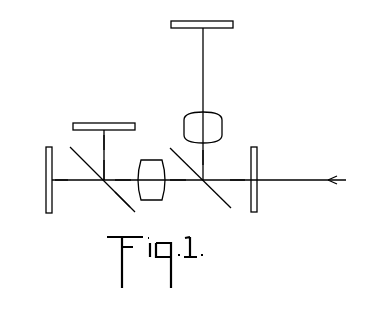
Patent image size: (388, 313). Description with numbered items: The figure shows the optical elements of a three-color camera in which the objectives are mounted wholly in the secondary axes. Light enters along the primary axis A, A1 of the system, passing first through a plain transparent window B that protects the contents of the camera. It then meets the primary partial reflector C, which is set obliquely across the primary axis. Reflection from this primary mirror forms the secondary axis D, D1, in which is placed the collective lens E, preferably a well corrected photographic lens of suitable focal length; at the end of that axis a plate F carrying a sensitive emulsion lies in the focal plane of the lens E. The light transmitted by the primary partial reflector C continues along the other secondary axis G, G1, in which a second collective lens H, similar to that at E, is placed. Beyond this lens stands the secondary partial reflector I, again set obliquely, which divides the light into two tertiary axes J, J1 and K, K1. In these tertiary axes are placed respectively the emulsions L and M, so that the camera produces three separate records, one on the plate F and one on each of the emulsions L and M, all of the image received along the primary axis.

The primary axis A is at (296, 181).
The primary axis A1 is at (237, 181).
The plain transparent window B is at (258, 155).
The primary partial reflector C is at (221, 198).
The secondary axis D is at (205, 155).
The secondary axis D1 is at (203, 65).
The collective lens E is at (212, 121).
The plate carrying a sensitive emulsion F is at (215, 25).
The other secondary axis G is at (178, 181).
The other secondary axis G1 is at (123, 178).
The second collective lens H is at (153, 163).
The secondary partial reflector I is at (123, 202).
The tertiary axis J is at (104, 180).
The tertiary axis J1 is at (102, 142).
The tertiary axis K is at (101, 182).
The tertiary axis K1 is at (60, 181).
The emulsion L is at (85, 128).
The emulsion M is at (48, 197).